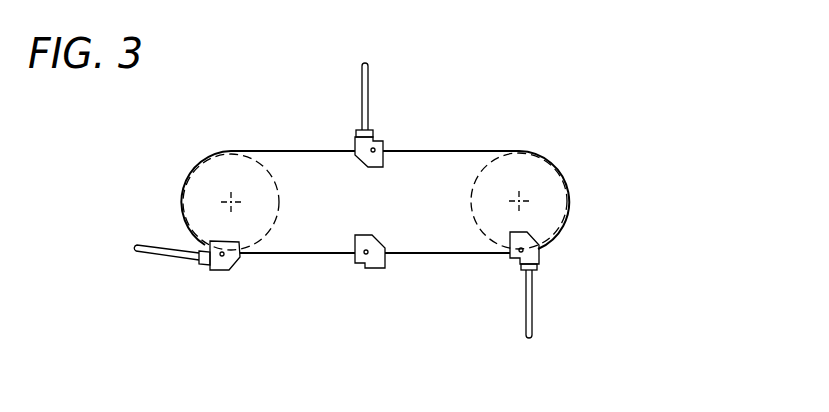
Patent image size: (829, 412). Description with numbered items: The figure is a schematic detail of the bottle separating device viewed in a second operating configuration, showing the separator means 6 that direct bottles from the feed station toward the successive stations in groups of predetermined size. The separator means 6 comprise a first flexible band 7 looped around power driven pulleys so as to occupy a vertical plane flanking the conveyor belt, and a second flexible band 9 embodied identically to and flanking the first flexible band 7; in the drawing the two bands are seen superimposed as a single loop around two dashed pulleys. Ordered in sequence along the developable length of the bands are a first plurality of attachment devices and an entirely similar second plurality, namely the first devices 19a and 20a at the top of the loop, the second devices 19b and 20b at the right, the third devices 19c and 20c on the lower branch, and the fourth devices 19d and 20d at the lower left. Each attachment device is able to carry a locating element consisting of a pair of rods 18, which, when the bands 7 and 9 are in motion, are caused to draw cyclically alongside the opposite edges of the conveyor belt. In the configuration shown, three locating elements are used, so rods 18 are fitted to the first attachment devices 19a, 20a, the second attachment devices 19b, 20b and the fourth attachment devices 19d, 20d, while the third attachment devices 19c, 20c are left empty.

The separator means 6 is at (141, 186).
The first flexible band 7 is at (430, 189).
The second flexible band 9 is at (571, 184).
The rods 18 is at (360, 77).
The first attachment device 19a is at (431, 107).
The first attachment device 20a is at (376, 137).
The second attachment device 19b is at (613, 261).
The second attachment device 20b is at (539, 256).
The third attachment device 19c is at (426, 305).
The third attachment device 20c is at (385, 260).
The fourth attachment device 19d is at (191, 300).
The fourth attachment device 20d is at (212, 270).